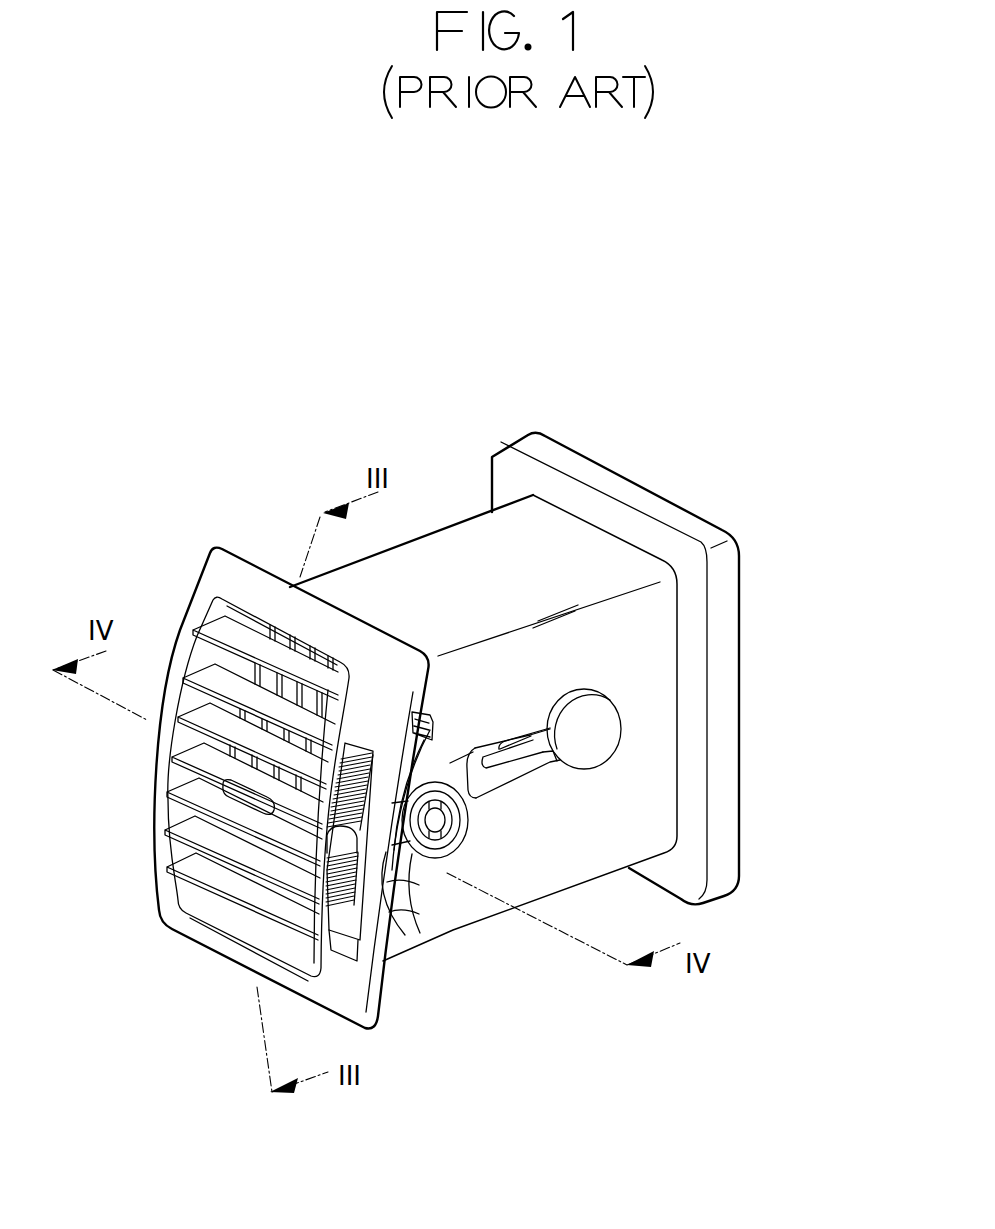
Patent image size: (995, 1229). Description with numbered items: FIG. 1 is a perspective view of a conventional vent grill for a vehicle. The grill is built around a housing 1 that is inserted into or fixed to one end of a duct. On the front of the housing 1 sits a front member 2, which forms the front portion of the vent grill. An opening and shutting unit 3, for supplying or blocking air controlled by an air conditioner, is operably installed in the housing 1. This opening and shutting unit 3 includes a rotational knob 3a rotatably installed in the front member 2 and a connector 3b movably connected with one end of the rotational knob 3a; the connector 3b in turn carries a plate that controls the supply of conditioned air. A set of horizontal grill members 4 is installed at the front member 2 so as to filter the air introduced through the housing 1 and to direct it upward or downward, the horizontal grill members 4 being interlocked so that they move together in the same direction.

The housing 1 is at (473, 528).
The front member 2 is at (342, 998).
The opening and shutting unit 3 is at (487, 832).
The rotational knob 3a is at (353, 882).
The connector 3b is at (490, 780).
The horizontal grill member 4 is at (187, 740).